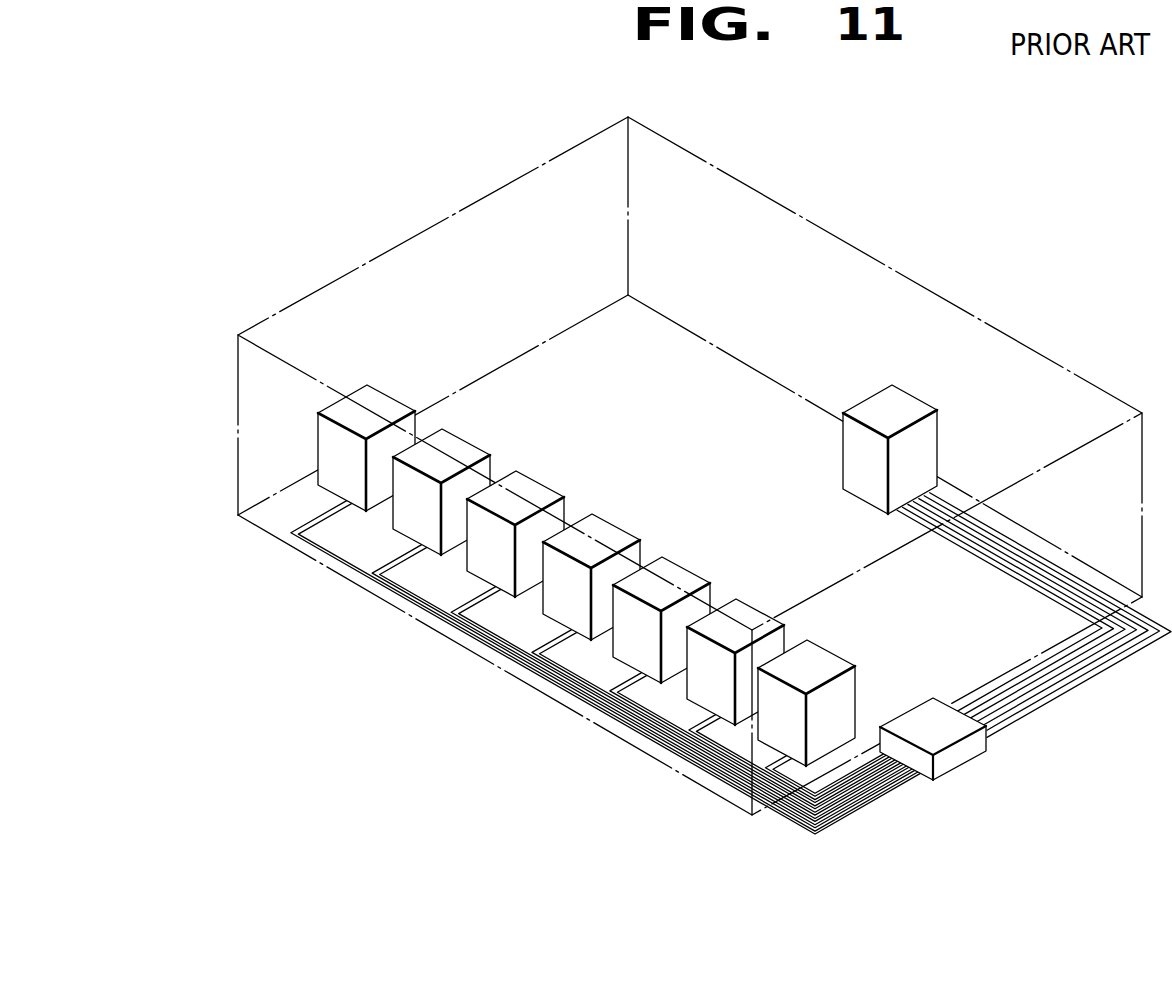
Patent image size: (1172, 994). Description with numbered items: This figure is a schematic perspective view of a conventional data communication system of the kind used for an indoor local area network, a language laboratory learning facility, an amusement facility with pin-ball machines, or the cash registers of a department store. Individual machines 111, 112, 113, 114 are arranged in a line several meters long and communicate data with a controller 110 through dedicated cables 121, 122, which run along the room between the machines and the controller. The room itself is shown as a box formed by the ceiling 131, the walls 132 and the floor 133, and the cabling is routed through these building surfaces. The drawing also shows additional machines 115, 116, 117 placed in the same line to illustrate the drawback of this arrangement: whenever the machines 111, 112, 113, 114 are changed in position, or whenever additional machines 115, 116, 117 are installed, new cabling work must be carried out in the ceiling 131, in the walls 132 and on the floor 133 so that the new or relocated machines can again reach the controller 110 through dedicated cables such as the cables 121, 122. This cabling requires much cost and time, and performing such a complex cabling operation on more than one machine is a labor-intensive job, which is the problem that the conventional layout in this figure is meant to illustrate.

The controller 110 is at (878, 410).
The machine 111 is at (608, 542).
The machine 112 is at (683, 582).
The machine 113 is at (752, 623).
The machine 114 is at (822, 666).
The additional machine 115 is at (392, 408).
The additional machine 116 is at (458, 456).
The additional machine 117 is at (538, 497).
The dedicated cable 121 is at (890, 800).
The dedicated cable 122 is at (1074, 690).
The ceiling 131 is at (792, 232).
The walls 132 is at (252, 395).
The floor 133 is at (290, 520).